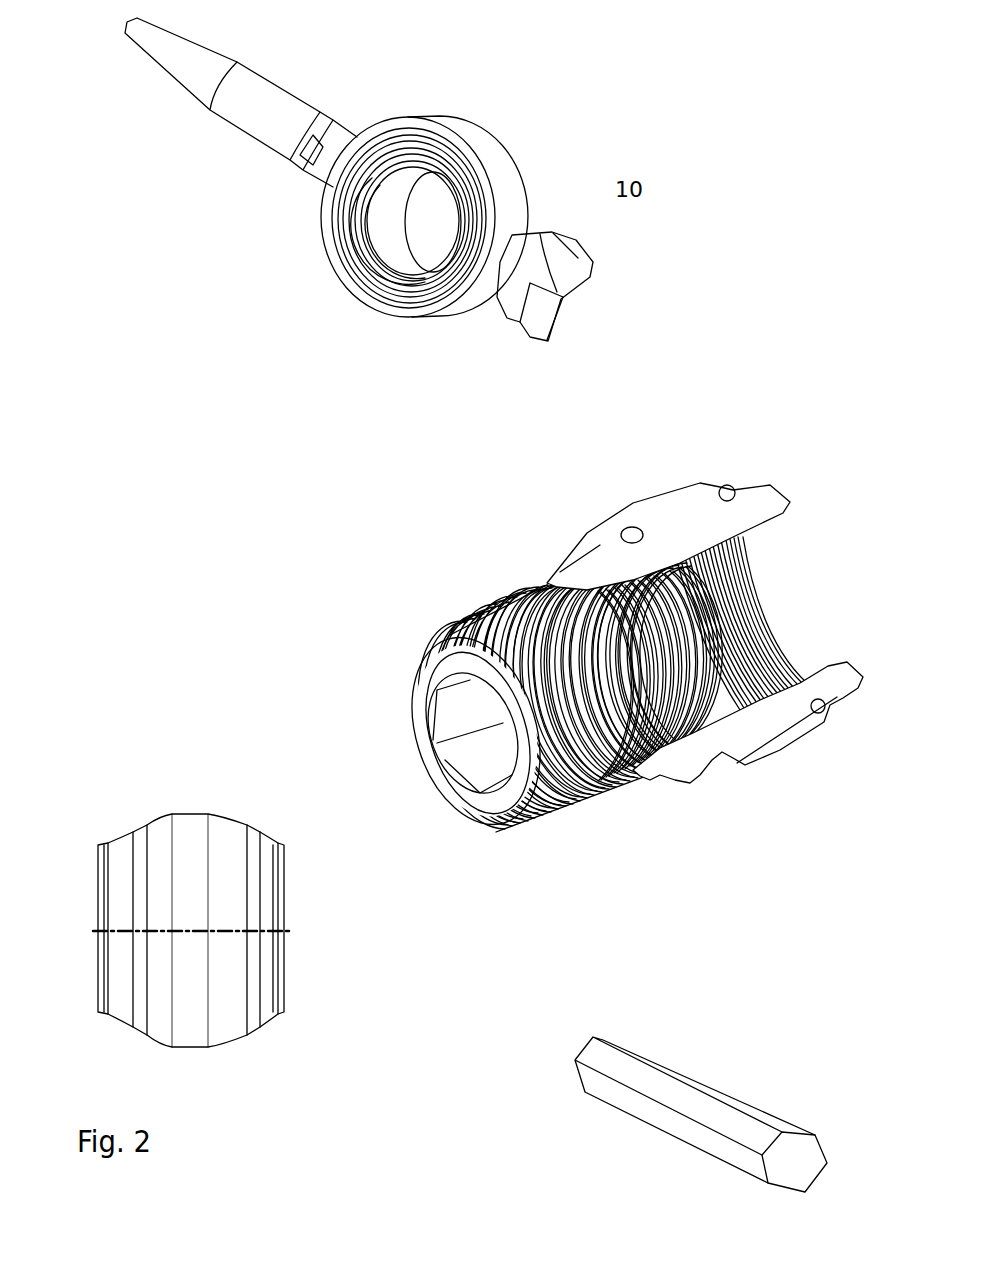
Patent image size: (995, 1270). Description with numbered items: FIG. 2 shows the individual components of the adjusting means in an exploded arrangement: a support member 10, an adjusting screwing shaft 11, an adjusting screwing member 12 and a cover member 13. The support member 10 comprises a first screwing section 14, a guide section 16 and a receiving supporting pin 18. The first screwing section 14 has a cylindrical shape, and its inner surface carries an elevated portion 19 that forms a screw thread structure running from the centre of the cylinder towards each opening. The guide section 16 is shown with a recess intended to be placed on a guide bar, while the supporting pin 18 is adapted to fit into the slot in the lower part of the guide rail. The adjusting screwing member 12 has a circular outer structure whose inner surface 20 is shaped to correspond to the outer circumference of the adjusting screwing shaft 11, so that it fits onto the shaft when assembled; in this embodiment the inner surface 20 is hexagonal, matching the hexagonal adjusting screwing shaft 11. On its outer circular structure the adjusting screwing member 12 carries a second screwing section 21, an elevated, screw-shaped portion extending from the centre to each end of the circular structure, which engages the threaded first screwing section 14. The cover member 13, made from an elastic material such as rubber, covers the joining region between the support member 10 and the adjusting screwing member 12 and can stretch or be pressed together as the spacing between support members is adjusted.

The support member 10 is at (760, 505).
The adjusting screwing shaft 11 is at (701, 1114).
The adjusting screwing member 12 is at (574, 666).
The cover member 13 is at (175, 930).
The first screwing section 14 is at (455, 135).
The guide section 16 is at (523, 323).
The receiving supporting pin 18 is at (235, 102).
The elevated portion 19 is at (745, 632).
The inner surface 20 is at (487, 760).
The second screwing section 21 is at (573, 798).